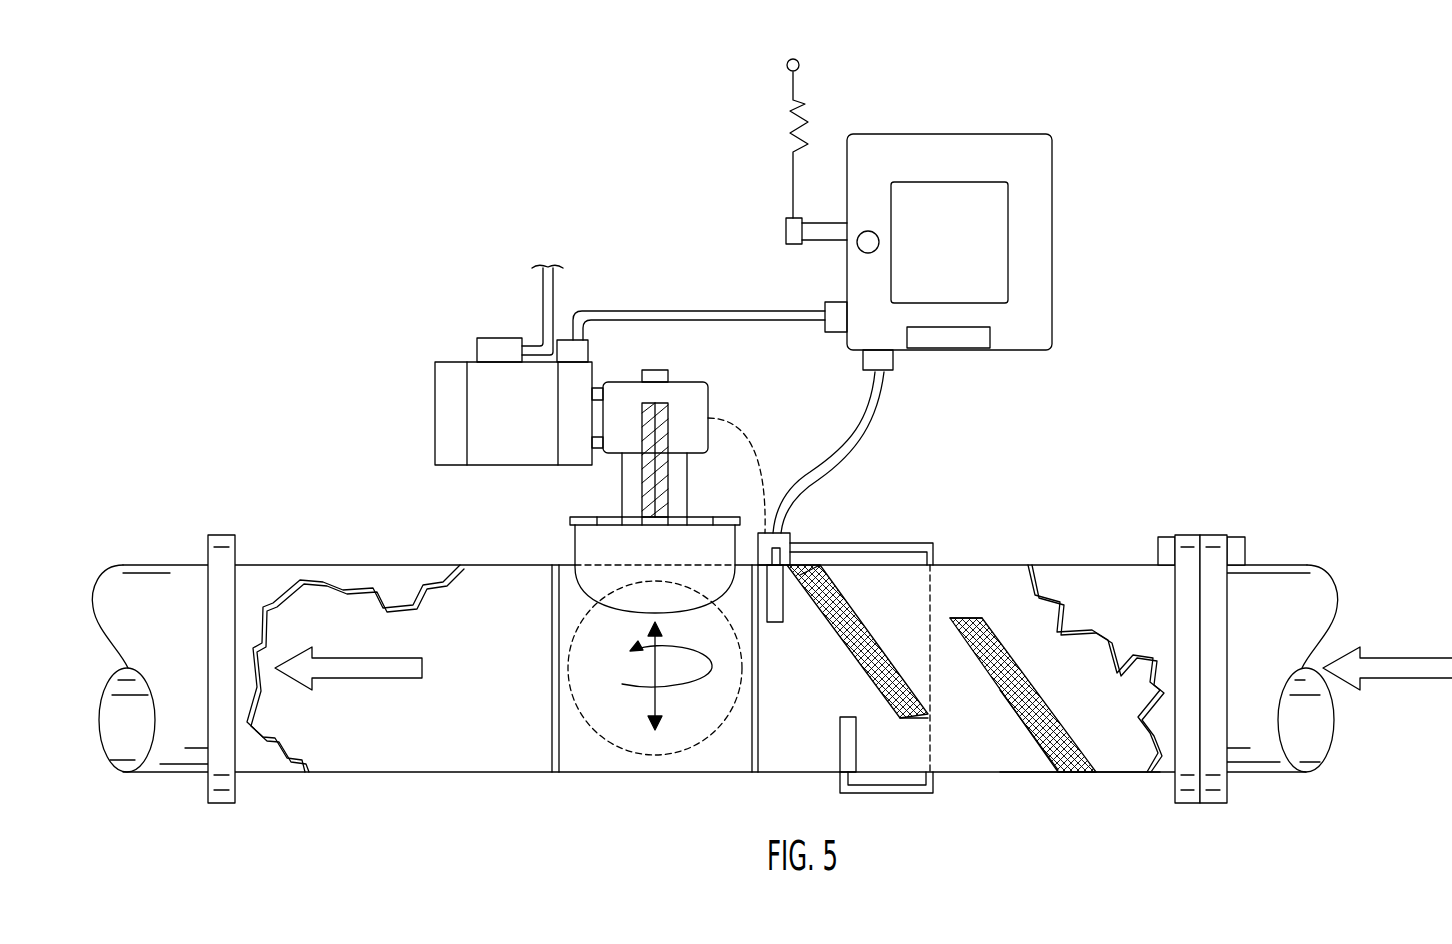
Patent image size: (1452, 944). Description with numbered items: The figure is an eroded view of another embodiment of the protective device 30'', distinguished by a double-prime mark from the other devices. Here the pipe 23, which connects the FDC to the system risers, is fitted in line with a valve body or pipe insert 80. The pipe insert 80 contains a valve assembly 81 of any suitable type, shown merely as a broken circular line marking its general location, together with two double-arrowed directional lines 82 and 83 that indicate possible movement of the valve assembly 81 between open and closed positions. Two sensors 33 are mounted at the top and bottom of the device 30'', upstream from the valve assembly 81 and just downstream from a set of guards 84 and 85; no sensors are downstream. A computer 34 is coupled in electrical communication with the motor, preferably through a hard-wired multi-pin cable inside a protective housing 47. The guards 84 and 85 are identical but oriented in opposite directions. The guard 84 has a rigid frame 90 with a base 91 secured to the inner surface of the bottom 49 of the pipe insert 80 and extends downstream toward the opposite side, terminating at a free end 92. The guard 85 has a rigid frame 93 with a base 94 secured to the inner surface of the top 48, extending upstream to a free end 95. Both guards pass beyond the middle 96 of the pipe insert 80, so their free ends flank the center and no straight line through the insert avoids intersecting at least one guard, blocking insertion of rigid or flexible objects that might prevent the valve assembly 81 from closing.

The device 30'' is at (580, 394).
The protective housing 47 is at (671, 310).
The computer 34 is at (1052, 215).
The sensors 33 is at (795, 530).
The base 94 is at (812, 563).
The top 48 is at (981, 564).
The pipe insert 80 is at (1092, 562).
The pipe 23 is at (1267, 564).
The guard 85 is at (865, 628).
The rigid frame 93 is at (837, 630).
The free end 95 is at (903, 719).
The guard 84 is at (1031, 683).
The free end 92 is at (960, 616).
The rigid frame 90 is at (1032, 741).
The base 91 is at (1078, 773).
The middle 96 is at (975, 676).
The bottom 49 is at (1115, 773).
The valve assembly 81 is at (593, 745).
The double-arrowed directional line 82 is at (663, 700).
The double-arrowed directional line 83 is at (703, 690).